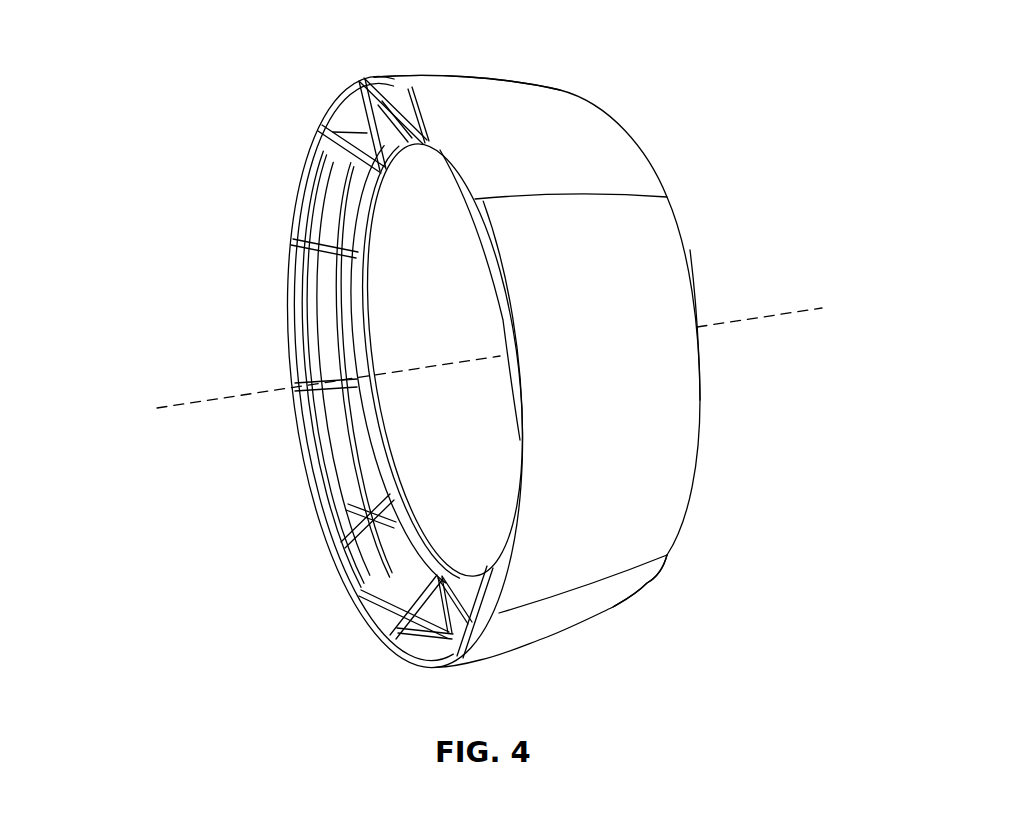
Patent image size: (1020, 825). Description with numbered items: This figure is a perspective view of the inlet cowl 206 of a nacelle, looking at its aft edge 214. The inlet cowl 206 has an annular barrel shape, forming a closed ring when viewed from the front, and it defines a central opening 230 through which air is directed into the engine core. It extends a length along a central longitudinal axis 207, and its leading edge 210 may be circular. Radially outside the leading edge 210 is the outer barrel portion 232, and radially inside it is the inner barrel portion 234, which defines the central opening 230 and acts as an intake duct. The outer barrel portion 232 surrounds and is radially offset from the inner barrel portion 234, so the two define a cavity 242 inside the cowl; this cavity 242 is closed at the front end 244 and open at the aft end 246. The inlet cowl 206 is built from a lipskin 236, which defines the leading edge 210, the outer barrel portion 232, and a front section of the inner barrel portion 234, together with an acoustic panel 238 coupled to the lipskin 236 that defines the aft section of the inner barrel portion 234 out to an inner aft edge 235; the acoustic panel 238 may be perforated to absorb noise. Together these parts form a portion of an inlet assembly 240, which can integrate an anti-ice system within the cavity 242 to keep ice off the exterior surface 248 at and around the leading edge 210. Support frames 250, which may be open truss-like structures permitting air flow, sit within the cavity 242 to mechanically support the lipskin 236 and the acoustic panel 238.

The inlet cowl 206 is at (573, 89).
The central longitudinal axis 207 is at (776, 312).
The leading edge 210 is at (683, 237).
The aft edge 214 is at (482, 238).
The central opening 230 is at (422, 444).
The outer barrel portion 232 is at (640, 478).
The inner barrel portion 234 is at (475, 518).
The inner aft edge 235 is at (380, 193).
The lipskin 236 is at (653, 371).
The acoustic panel 238 is at (407, 345).
The inlet assembly 240 is at (150, 176).
The cavity 242 is at (316, 191).
The front end 244 is at (682, 185).
The aft end 246 is at (317, 552).
The exterior surface 248 is at (625, 540).
The support frames 250 is at (322, 237).